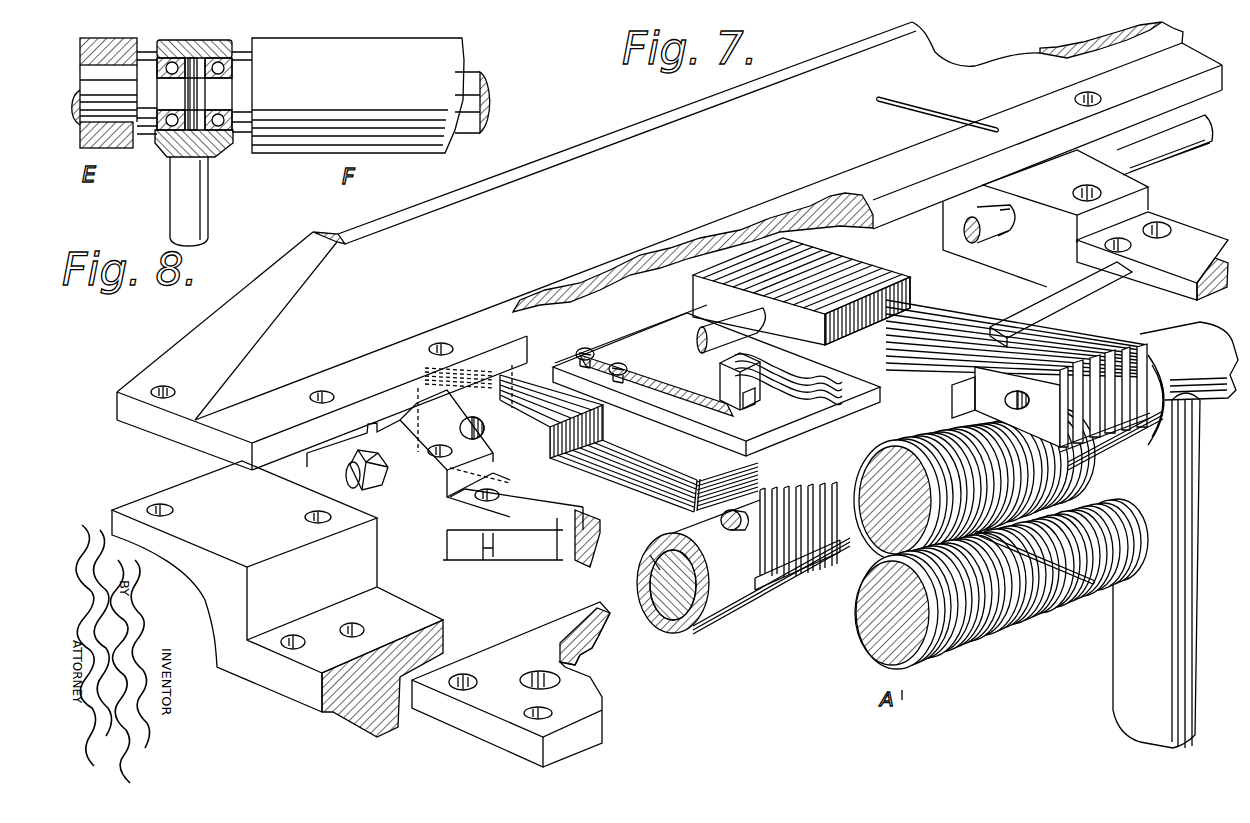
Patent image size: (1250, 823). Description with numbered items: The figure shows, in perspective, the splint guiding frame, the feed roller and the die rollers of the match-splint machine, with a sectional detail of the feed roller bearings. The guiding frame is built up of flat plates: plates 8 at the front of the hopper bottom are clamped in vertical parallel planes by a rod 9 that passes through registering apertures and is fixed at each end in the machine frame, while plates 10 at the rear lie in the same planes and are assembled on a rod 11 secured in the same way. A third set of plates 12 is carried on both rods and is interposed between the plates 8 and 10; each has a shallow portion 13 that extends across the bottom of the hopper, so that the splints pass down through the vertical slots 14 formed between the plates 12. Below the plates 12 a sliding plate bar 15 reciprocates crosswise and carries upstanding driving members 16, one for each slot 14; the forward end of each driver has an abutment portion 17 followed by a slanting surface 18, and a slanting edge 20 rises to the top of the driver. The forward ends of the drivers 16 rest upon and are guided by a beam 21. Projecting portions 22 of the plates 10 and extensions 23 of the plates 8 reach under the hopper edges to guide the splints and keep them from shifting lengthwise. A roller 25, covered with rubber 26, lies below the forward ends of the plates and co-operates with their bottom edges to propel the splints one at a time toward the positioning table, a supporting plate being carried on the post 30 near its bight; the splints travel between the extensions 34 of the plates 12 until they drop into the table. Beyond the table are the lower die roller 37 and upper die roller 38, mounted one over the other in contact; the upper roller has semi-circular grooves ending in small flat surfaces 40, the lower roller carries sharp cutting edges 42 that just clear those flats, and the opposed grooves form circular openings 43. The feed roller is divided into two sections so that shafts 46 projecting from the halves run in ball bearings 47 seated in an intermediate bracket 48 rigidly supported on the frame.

In FIG. 7, the plates 8 is at (764, 560).
In FIG. 7, the rod 9 is at (1027, 401).
In FIG. 7, the plates 10 is at (540, 438).
In FIG. 7, the rod 11 is at (720, 325).
In FIG. 7, the plates 12 is at (419, 453).
In FIG. 7, the shallow portion 13 is at (549, 528).
In FIG. 7, the vertical slots 14 is at (630, 463).
In FIG. 7, the sliding plate bar 15 is at (716, 380).
In FIG. 7, the driving members 16 is at (722, 378).
In FIG. 7, the abutment portion 17 is at (810, 388).
In FIG. 7, the slanting surface 18 is at (775, 400).
In FIG. 7, the slanting edge 20 is at (754, 404).
In FIG. 7, the beam 21 is at (1061, 304).
In FIG. 7, the projecting portions 22 is at (845, 358).
In FIG. 7, the extensions 23 is at (962, 397).
In FIG. 8, the roller 25 is at (478, 72).
In FIG. 7, the roller 25 is at (655, 572).
In FIG. 8, the rubber covering 26 is at (133, 38).
In FIG. 7, the rubber covering 26 is at (698, 582).
In FIG. 7, the post 30 is at (1156, 570).
In FIG. 7, the extensions 34 is at (785, 578).
In FIG. 7, the die roller 37 is at (872, 627).
In FIG. 7, the die roller 38 is at (870, 472).
In FIG. 7, the flat surfaces 40 is at (868, 448).
In FIG. 7, the cutting edges 42 is at (935, 652).
In FIG. 7, the circular openings 43 is at (962, 632).
In FIG. 8, the shafts 46 is at (170, 90).
In FIG. 8, the ball bearings 47 is at (212, 52).
In FIG. 8, the intermediate bracket 48 is at (182, 202).